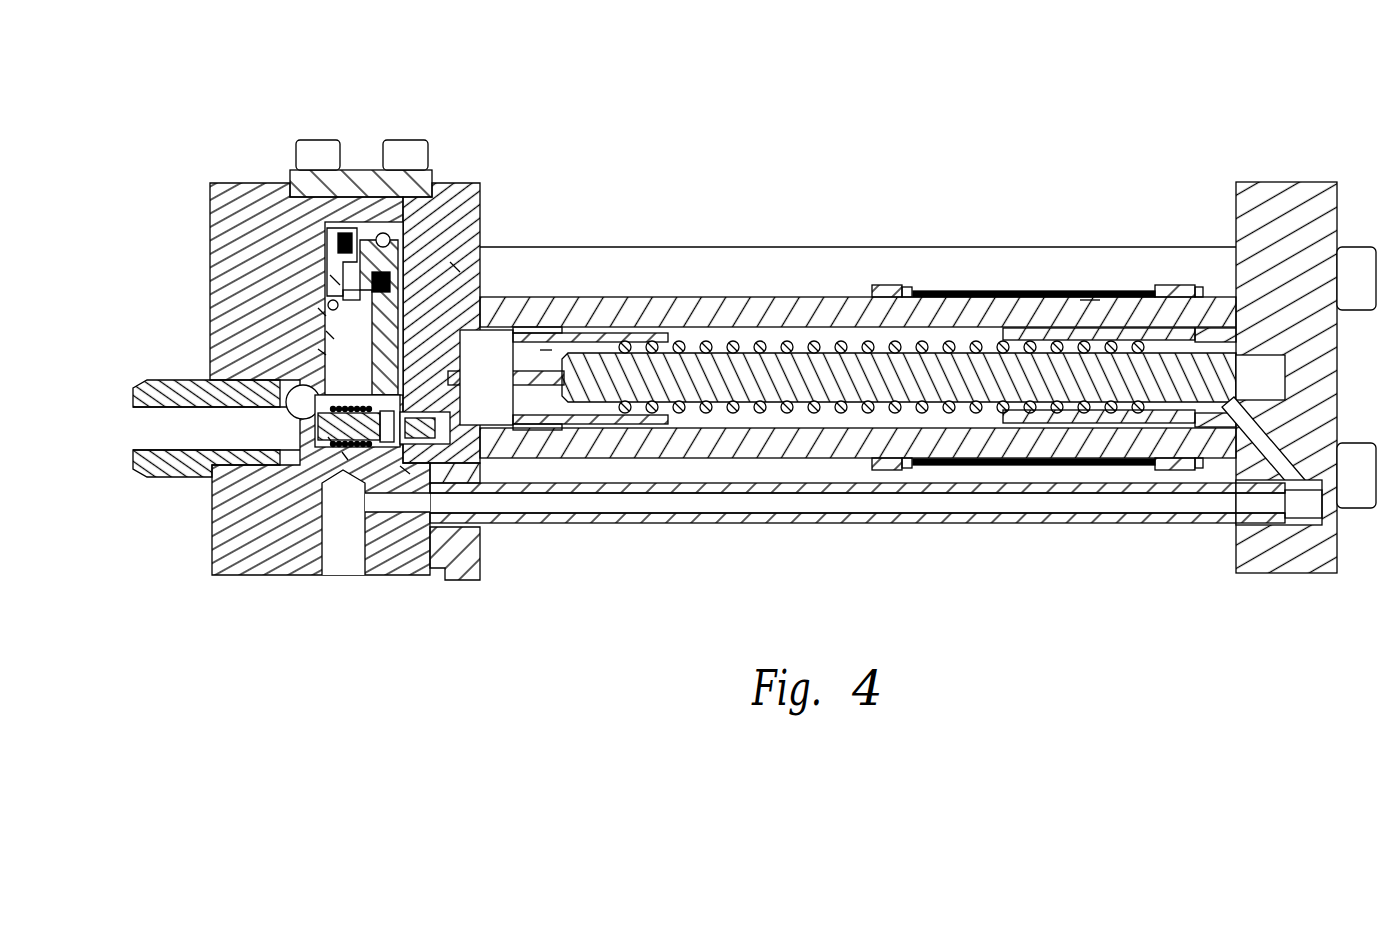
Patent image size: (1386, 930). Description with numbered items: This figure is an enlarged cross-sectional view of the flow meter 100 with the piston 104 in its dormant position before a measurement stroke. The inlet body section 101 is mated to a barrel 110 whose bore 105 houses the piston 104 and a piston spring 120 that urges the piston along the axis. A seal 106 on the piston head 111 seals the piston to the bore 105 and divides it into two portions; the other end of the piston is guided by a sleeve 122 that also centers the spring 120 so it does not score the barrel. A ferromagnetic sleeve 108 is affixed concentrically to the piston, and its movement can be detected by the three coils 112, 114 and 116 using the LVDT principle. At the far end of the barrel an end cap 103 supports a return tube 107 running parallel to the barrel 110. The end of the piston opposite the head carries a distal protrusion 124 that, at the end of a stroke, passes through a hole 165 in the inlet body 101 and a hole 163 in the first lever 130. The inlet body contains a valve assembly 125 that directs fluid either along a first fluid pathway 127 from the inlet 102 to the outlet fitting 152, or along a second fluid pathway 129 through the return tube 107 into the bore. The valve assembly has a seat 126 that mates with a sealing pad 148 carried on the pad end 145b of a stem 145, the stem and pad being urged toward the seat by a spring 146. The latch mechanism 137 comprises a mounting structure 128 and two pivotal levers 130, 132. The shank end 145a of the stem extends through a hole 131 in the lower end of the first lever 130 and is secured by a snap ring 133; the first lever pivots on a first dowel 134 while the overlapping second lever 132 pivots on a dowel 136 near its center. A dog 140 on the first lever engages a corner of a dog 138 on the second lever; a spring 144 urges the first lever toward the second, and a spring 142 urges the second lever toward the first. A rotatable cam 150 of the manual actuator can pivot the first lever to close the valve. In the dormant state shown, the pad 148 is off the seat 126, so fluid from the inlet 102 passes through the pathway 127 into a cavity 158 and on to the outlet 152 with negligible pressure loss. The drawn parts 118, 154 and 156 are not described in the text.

The flow meter 100 is at (990, 86).
The inlet body section 101 is at (215, 560).
The inlet 102 is at (345, 580).
The end cap 103 is at (1283, 567).
The piston 104 is at (1225, 420).
The bore 105 is at (767, 415).
The seal 106 is at (1200, 322).
The return tube 107 is at (735, 522).
The sleeve 108 is at (1048, 328).
The barrel 110 is at (830, 458).
The piston head 111 is at (905, 292).
The coil 112 is at (948, 290).
The coil 114 is at (1015, 294).
The coil 116 is at (1090, 300).
The retainer 118 is at (880, 292).
The piston spring 120 is at (712, 420).
The sleeve 122 is at (665, 332).
The distal protrusion 124 is at (532, 315).
The valve assembly 125 is at (395, 408).
The seat 126 is at (470, 578).
The first fluid pathway 127 is at (470, 488).
The mounting structure 128 is at (325, 190).
The second fluid pathway 129 is at (985, 500).
The first lever 130 is at (465, 250).
The hole 131 is at (330, 440).
The second lever 132 is at (322, 352).
The snap ring 133 is at (345, 455).
The first dowel 134 is at (388, 235).
The dowel 136 is at (322, 312).
The latch mechanism 137 is at (335, 280).
The dog 138 is at (330, 335).
The dog 140 is at (312, 290).
The spring 142 is at (350, 233).
The spring 144 is at (395, 320).
The stem 145 is at (330, 440).
The shank end 145a is at (340, 450).
The pad end 145b is at (405, 455).
The spring 146 is at (390, 500).
The sealing pad 148 is at (405, 470).
The rotatable cam 150 is at (290, 396).
The outlet fitting 152 is at (140, 472).
The angled passage 154 is at (1213, 408).
The spring 156 is at (880, 420).
The cavity 158 is at (285, 432).
The hole 163 is at (440, 330).
The hole 165 is at (545, 352).